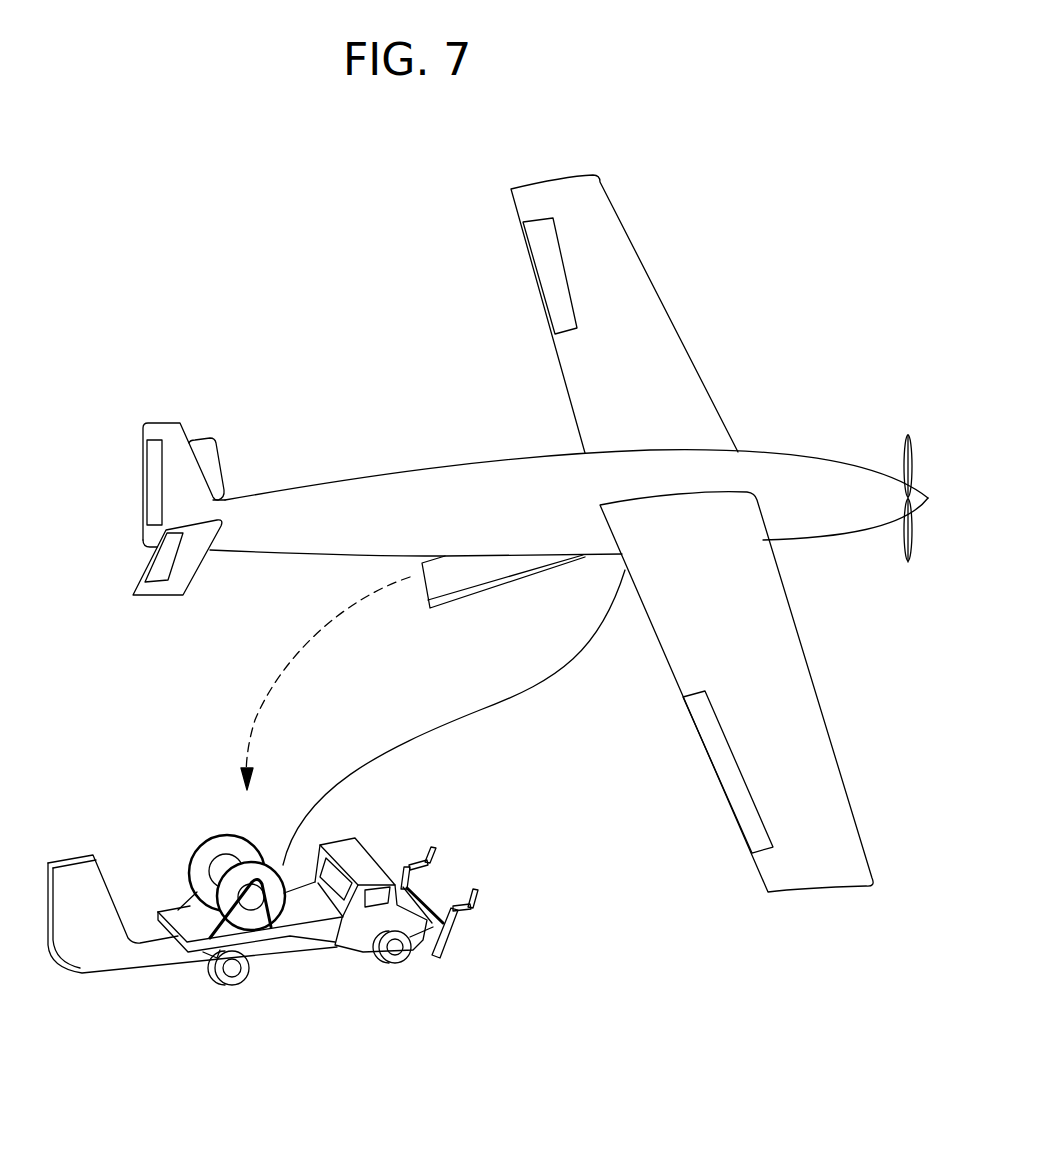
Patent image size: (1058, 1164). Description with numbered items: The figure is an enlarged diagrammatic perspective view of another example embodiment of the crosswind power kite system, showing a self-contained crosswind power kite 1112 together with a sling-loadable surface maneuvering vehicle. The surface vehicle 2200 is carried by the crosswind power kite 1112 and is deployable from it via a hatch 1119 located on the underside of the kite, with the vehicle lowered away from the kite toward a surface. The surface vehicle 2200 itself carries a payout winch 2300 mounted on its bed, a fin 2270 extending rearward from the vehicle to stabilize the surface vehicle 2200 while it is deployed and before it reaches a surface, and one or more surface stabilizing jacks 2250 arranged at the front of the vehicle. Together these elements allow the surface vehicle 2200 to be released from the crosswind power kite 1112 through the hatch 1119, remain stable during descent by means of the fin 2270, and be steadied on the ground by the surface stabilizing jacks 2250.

The self-contained crosswind power kite 1112 is at (802, 450).
The hatch 1119 is at (478, 595).
The surface vehicle 2200 is at (358, 830).
The surface stabilizing jacks 2250 is at (433, 848).
The fin 2270 is at (82, 950).
The payout winch 2300 is at (213, 838).